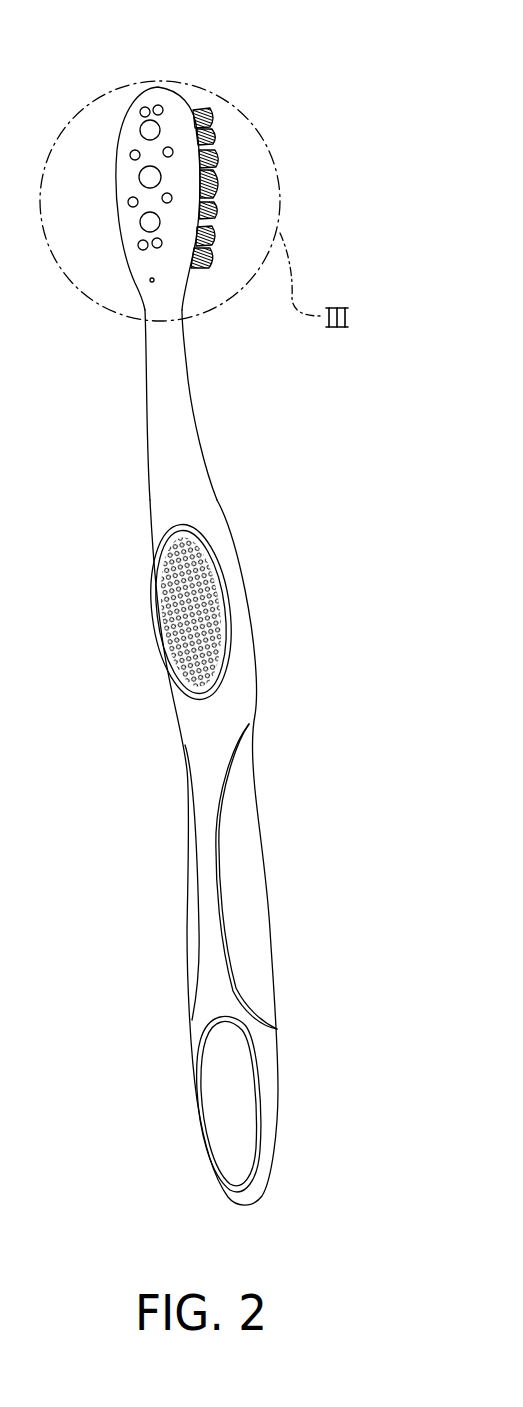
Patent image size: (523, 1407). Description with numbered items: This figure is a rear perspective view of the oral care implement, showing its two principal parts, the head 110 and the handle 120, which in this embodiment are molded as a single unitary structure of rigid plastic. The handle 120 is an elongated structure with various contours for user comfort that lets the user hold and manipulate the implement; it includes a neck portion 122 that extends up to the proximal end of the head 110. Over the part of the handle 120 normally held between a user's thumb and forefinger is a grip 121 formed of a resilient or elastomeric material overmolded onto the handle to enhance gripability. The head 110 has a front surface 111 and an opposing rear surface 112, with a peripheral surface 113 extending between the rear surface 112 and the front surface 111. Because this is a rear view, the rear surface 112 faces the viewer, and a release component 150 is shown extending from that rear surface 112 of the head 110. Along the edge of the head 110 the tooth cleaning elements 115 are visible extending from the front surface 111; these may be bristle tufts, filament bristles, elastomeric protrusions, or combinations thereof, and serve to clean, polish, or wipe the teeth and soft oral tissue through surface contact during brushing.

The head 110 is at (192, 107).
The front surface 111 is at (220, 168).
The rear surface 112 is at (143, 148).
The peripheral surface 113 is at (190, 132).
The release component 150 is at (150, 177).
The tooth cleaning elements 115 is at (205, 302).
The handle 120 is at (245, 870).
The grip 121 is at (210, 612).
The neck portion 122 is at (178, 392).